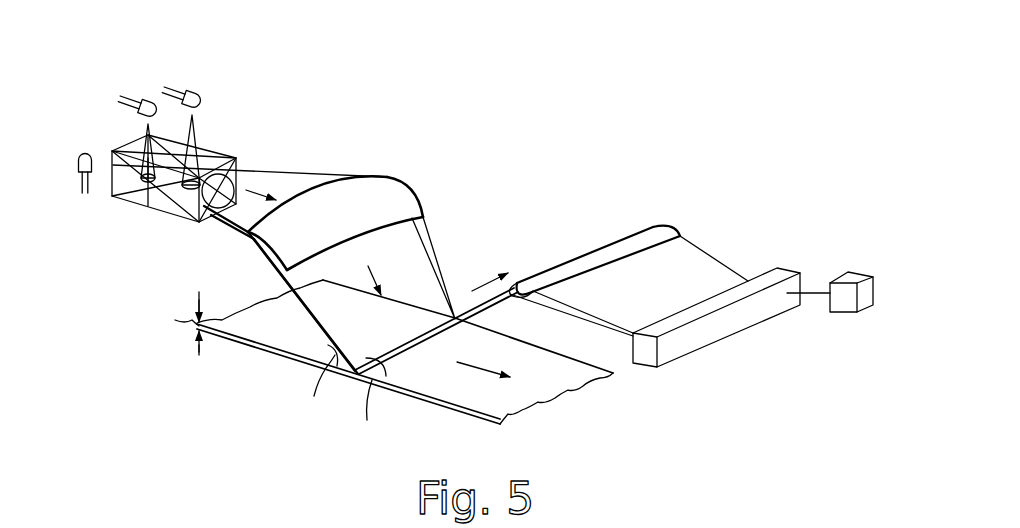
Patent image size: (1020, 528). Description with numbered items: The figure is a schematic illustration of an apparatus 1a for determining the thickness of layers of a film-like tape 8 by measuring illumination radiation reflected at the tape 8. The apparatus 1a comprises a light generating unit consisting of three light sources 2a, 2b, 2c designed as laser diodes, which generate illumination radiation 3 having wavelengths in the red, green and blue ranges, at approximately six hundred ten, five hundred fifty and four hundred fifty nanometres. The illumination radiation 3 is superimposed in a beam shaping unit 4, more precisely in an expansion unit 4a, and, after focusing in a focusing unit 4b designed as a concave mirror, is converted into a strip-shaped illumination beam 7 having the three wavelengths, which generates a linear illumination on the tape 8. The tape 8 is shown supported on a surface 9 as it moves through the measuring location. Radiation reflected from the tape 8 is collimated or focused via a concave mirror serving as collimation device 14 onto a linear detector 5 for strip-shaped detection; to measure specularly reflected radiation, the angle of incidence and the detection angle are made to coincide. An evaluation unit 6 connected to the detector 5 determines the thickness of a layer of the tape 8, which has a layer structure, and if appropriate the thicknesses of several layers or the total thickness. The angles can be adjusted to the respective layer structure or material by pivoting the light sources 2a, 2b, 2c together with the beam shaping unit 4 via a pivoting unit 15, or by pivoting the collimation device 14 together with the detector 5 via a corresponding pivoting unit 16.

The apparatus 1a is at (716, 149).
The pivoting unit 15 is at (106, 52).
The light source 2a is at (84, 151).
The light source 2b is at (144, 100).
The light source 2c is at (193, 95).
The beam shaping unit 4 is at (433, 88).
The expansion unit 4a is at (221, 139).
The focusing unit 4b is at (382, 190).
The illumination radiation 3 is at (301, 184).
The strip-shaped illumination beam 7 is at (407, 258).
The tape 8 is at (278, 333).
The support surface 9 is at (472, 370).
The collimation device 14 is at (633, 242).
The linear detector 5 is at (742, 313).
The evaluation unit 6 is at (840, 300).
The pivoting unit 16 is at (820, 258).